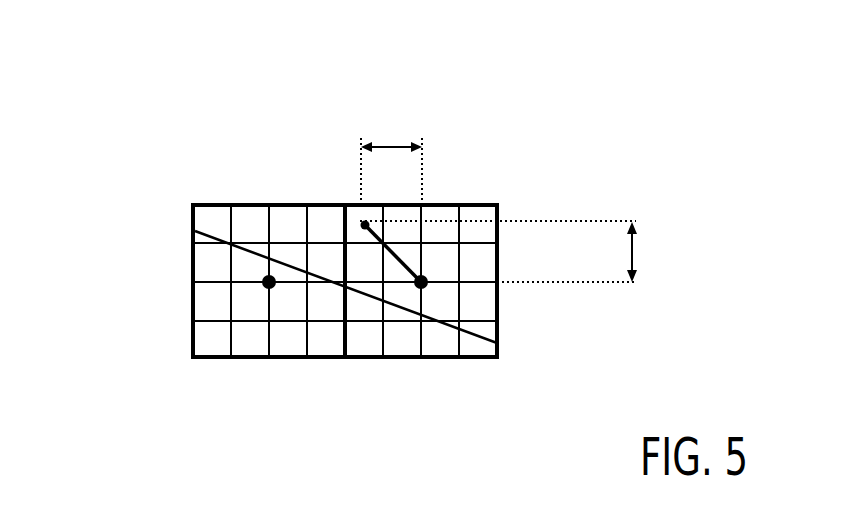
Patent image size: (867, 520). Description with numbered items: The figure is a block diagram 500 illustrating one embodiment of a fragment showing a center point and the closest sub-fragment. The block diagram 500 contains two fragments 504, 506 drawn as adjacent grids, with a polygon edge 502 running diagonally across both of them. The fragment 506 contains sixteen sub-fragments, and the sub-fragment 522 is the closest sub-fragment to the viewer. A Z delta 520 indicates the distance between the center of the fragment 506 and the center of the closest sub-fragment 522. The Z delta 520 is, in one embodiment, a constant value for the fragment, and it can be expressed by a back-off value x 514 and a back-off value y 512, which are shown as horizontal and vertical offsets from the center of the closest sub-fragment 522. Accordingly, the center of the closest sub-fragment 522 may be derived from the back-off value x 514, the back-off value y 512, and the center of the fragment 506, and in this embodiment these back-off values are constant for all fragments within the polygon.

The block diagram 500 is at (62, 105).
The polygon edge 502 is at (418, 298).
The fragment 504 is at (230, 205).
The fragment 506 is at (458, 205).
The back-off value y 512 is at (593, 256).
The back-off value x 514 is at (473, 151).
The Z delta 520 is at (395, 253).
The closest sub-fragment 522 is at (350, 205).